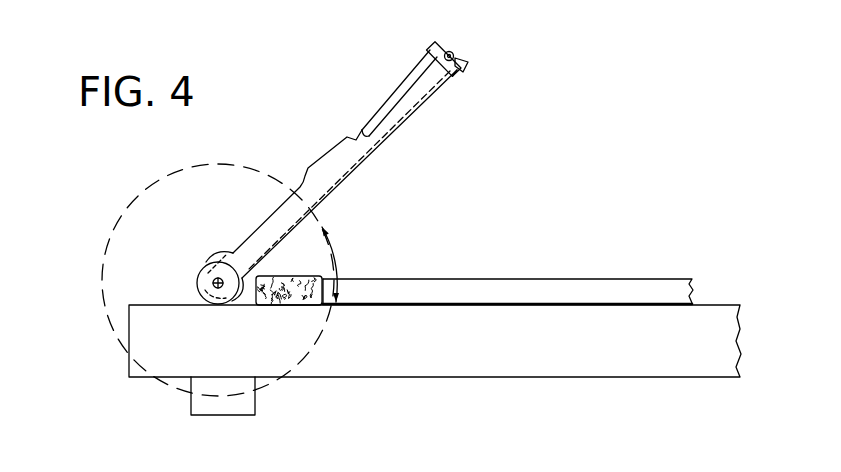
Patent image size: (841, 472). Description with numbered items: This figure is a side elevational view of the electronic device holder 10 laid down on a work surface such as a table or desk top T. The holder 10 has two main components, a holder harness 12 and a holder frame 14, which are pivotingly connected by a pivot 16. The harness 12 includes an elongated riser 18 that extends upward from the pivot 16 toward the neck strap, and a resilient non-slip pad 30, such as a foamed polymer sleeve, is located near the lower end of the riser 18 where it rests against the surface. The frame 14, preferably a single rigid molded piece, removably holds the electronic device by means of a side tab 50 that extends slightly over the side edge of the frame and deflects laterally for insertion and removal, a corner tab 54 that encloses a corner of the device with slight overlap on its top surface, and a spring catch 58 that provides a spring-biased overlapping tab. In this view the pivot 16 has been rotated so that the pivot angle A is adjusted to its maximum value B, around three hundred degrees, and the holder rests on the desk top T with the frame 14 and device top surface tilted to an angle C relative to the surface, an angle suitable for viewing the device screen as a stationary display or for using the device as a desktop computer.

The electronic device holder 10 is at (576, 150).
The holder harness 12 is at (531, 240).
The holder frame 14 is at (384, 162).
The pivot 16 is at (205, 280).
The riser 18 is at (607, 290).
The non-slip pad 30 is at (288, 306).
The side tab 50 is at (337, 152).
The corner tab 54 is at (230, 252).
The spring catch 58 is at (443, 43).
The table or desk top T is at (557, 360).
The tilt angle C is at (333, 250).